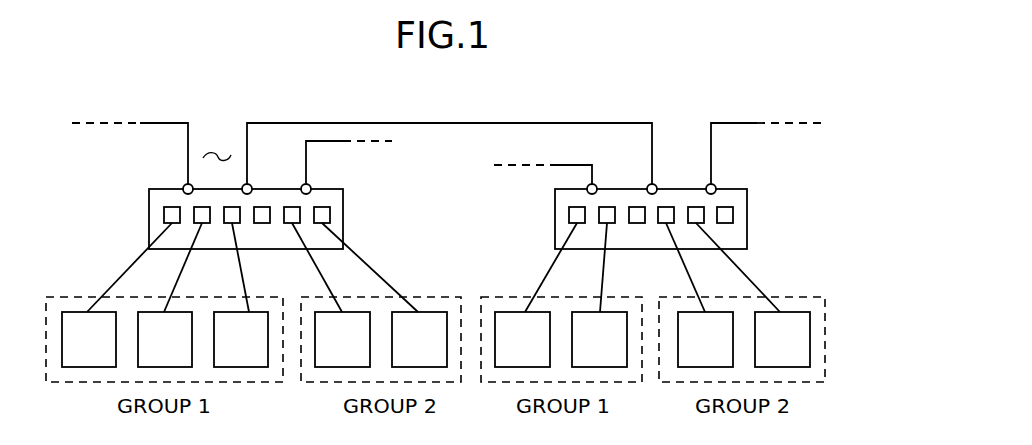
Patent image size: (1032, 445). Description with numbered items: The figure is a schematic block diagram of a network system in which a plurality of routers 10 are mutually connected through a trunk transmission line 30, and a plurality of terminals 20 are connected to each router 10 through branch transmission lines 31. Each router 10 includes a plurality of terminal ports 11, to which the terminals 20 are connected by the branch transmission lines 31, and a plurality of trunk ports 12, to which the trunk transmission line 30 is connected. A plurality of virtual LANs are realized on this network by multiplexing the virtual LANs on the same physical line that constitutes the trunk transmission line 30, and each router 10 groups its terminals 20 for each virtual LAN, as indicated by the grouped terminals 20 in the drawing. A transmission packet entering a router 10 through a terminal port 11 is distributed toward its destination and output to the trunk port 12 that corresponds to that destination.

The router 10 is at (343, 192).
The terminal port 11 is at (165, 215).
The trunk port 12 is at (250, 185).
The terminal 20 is at (505, 318).
The trunk transmission line 30 is at (470, 123).
The branch transmission line 31 is at (378, 275).